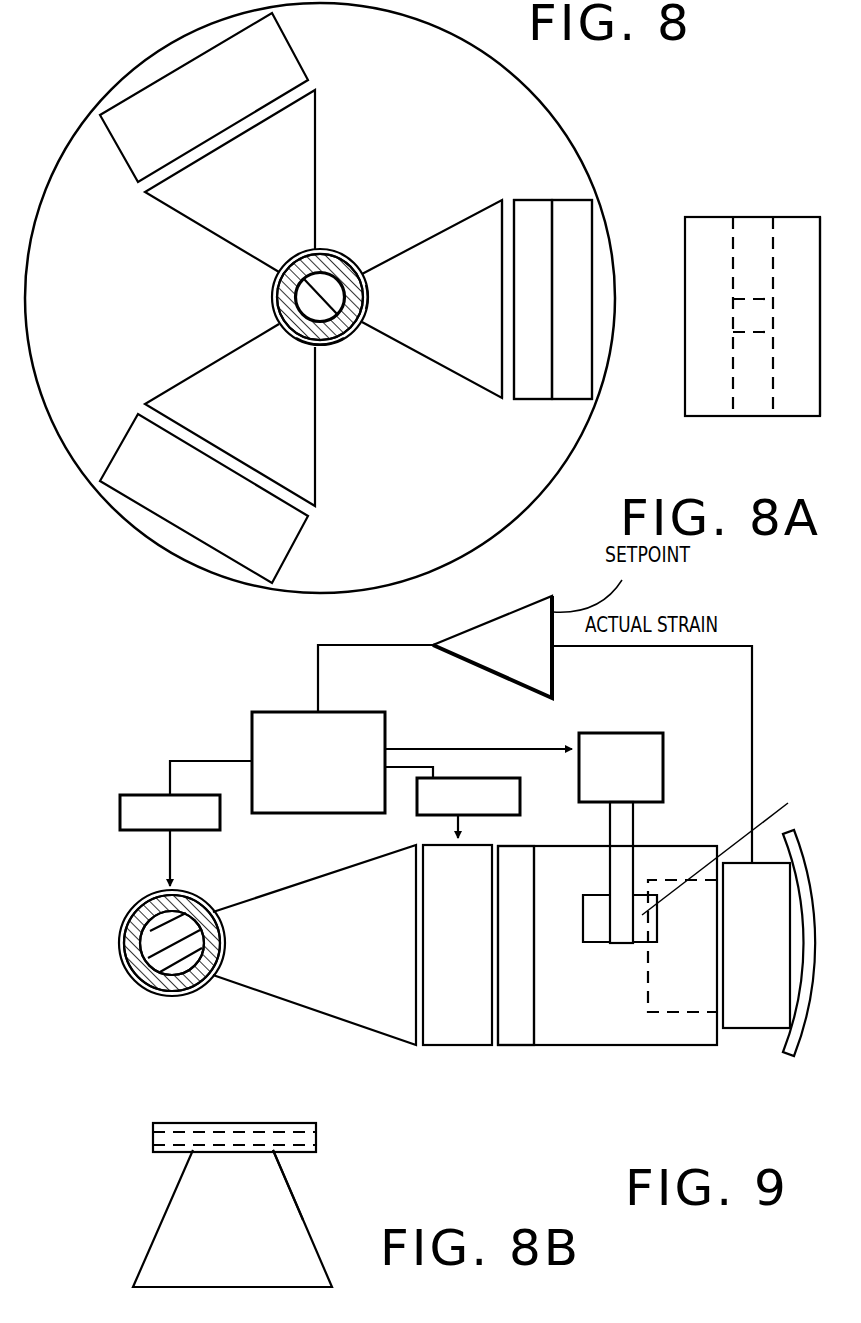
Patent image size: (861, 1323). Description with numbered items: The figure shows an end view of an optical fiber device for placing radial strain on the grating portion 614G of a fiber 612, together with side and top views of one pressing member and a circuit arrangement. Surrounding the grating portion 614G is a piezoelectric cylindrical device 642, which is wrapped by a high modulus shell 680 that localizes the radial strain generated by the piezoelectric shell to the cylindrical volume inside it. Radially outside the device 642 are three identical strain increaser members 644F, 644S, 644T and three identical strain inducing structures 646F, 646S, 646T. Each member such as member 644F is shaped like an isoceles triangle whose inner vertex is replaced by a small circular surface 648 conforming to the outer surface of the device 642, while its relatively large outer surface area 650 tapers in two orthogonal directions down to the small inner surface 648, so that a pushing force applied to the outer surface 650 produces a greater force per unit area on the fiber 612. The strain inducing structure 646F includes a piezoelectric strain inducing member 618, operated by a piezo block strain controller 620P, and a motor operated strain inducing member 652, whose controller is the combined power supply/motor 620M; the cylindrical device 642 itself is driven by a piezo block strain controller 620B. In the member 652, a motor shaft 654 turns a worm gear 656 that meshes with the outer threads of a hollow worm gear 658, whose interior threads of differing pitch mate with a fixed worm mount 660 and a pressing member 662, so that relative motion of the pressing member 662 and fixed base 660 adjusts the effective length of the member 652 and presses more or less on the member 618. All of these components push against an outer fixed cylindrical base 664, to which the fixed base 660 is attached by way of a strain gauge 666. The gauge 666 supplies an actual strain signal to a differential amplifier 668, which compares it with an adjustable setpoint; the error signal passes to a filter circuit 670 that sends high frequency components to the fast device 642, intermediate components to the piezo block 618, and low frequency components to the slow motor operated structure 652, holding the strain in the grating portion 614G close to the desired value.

In FIG. 8, the fiber 612 is at (352, 262).
In FIG. 9, the fiber 612 is at (158, 937).
In FIG. 8B, the fiber 612 is at (303, 1163).
In FIG. 8, the grating portion 614G is at (343, 252).
In FIG. 8, the piezoelectric strain inducing member 618 is at (535, 215).
In FIG. 9, the piezoelectric strain inducing member 618 is at (453, 1015).
In FIG. 9, the power source/piezo block strain controller 620B is at (120, 808).
In FIG. 9, the power source/piezo block strain controller 620P is at (470, 778).
In FIG. 9, the combined power supply/motor 620M is at (620, 733).
In FIG. 8, the piezoelectric cylindrical device 642 is at (330, 250).
In FIG. 9, the piezoelectric cylindrical device 642 is at (172, 996).
In FIG. 8B, the piezoelectric cylindrical device 642 is at (217, 1122).
In FIG. 8, the third strain increaser member 644T is at (263, 213).
In FIG. 8, the second strain increaser member 644S is at (220, 382).
In FIG. 8, the first strain increaser member 644F is at (455, 322).
In FIG. 8A, the first strain increaser member 644F is at (693, 398).
In FIG. 9, the first strain increaser member 644F is at (328, 985).
In FIG. 8B, the first strain increaser member 644F is at (215, 1262).
In FIG. 8, the third strain inducing structure 646T is at (181, 80).
In FIG. 8, the second strain inducing structure 646S is at (192, 510).
In FIG. 8, the first strain inducing structure 646F is at (548, 208).
In FIG. 8, the circular surface 648 is at (378, 298).
In FIG. 8A, the circular surface 648 is at (757, 308).
In FIG. 8B, the circular surface 648 is at (193, 1147).
In FIG. 8, the outer surface area 650 is at (507, 357).
In FIG. 8A, the outer surface area 650 is at (797, 395).
In FIG. 8B, the outer surface area 650 is at (307, 1289).
In FIG. 8, the motor operated strain inducing member 652 is at (577, 282).
In FIG. 9, the motor operated strain inducing member 652 is at (610, 1032).
In FIG. 9, the motor shaft 654 is at (633, 825).
In FIG. 9, the worm gear 656 is at (735, 845).
In FIG. 9, the worm gear 658 is at (550, 1030).
In FIG. 9, the fixed worm mount 660 is at (683, 1015).
In FIG. 9, the pressing member 662 is at (516, 1030).
In FIG. 8, the outer fixed cylindrical base 664 is at (305, 590).
In FIG. 9, the outer fixed cylindrical base 664 is at (817, 1010).
In FIG. 9, the strain gauge 666 is at (757, 1018).
In FIG. 9, the differential amplifier 668 is at (435, 654).
In FIG. 9, the filter circuit 670 is at (290, 712).
In FIG. 8, the high modulus shell 680 is at (345, 347).